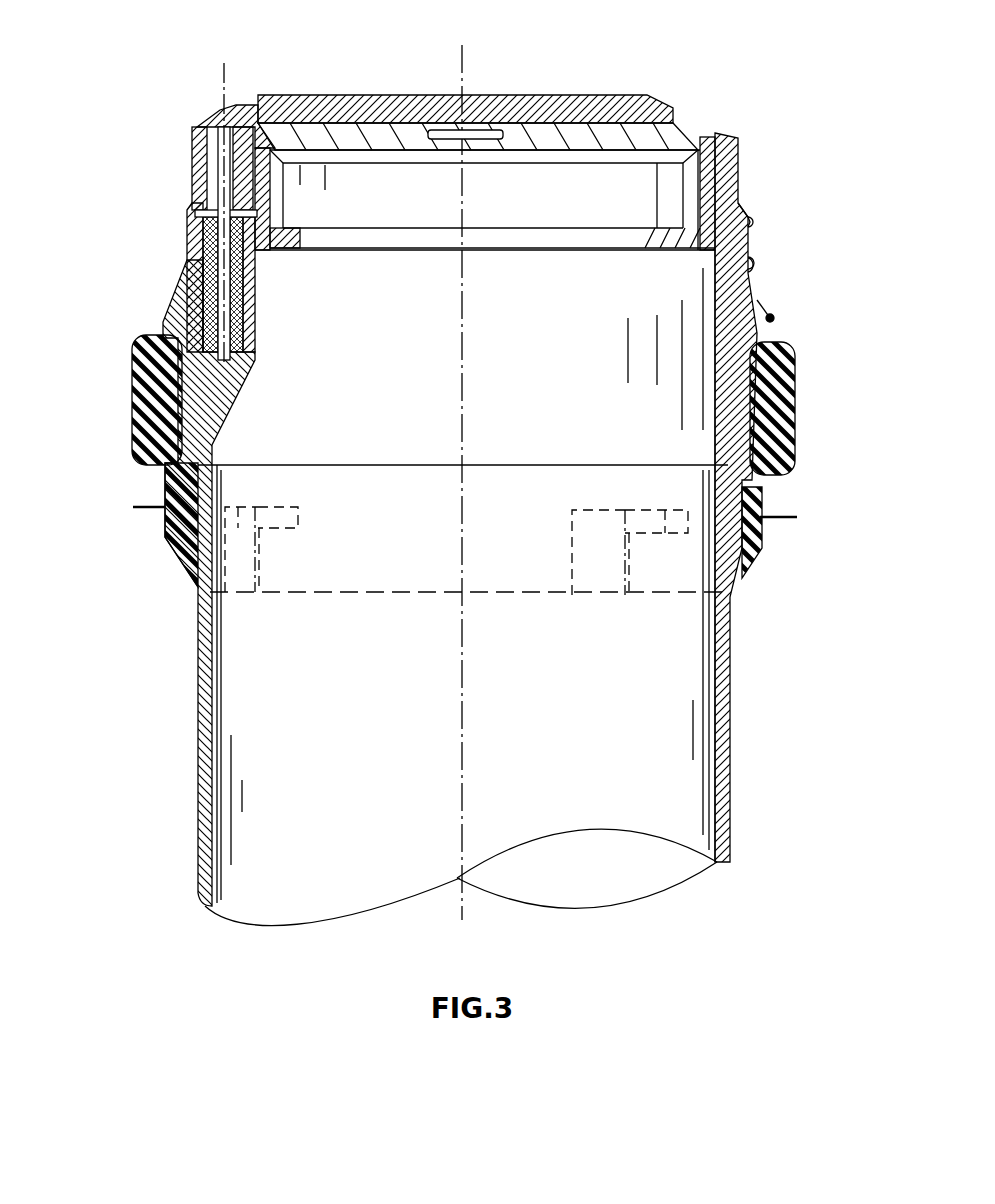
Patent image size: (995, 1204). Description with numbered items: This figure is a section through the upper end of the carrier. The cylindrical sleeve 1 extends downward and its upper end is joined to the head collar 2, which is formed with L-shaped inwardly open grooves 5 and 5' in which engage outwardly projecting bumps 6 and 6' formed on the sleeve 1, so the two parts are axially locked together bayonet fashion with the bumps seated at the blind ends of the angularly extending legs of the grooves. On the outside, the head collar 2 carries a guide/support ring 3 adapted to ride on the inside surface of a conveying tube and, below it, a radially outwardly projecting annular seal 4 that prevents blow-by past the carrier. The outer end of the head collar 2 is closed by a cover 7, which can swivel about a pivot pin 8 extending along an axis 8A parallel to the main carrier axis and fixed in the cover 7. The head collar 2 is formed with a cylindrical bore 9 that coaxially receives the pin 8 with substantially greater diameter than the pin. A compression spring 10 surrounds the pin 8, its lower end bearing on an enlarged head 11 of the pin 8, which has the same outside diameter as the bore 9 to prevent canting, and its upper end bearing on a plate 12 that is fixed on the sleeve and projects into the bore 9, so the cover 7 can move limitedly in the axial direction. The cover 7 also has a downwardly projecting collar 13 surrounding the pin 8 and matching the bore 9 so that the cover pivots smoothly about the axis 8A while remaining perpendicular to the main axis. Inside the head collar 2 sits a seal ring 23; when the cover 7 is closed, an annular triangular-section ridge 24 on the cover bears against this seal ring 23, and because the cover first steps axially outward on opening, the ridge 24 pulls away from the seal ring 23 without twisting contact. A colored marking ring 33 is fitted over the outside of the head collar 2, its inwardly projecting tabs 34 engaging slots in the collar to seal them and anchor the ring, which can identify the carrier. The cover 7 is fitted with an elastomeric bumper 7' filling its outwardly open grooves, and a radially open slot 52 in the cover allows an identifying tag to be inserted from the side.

The sleeve 1 is at (730, 778).
The head collar 2 is at (772, 318).
The guide/support ring 3 is at (782, 403).
The annular seal 4 is at (780, 512).
The groove 5 is at (241, 596).
The bump 6 is at (306, 595).
The groove 5' is at (598, 600).
The bump 6' is at (656, 598).
The cover 7 is at (447, 80).
The elastomeric bumper 7' is at (465, 64).
The pivot pin 8 is at (222, 298).
The axis 8A is at (228, 92).
The cylindrical bore 9 is at (205, 316).
The compression spring 10 is at (188, 258).
The enlarged head 11 is at (135, 412).
The plate 12 is at (190, 203).
The collar 13 is at (195, 138).
The seal ring 23 is at (742, 183).
The annular triangular-section ridge 24 is at (713, 137).
The colored marking ring 33 is at (748, 265).
The inwardly projecting tabs 34 is at (750, 222).
The radially open slot 52 is at (515, 95).